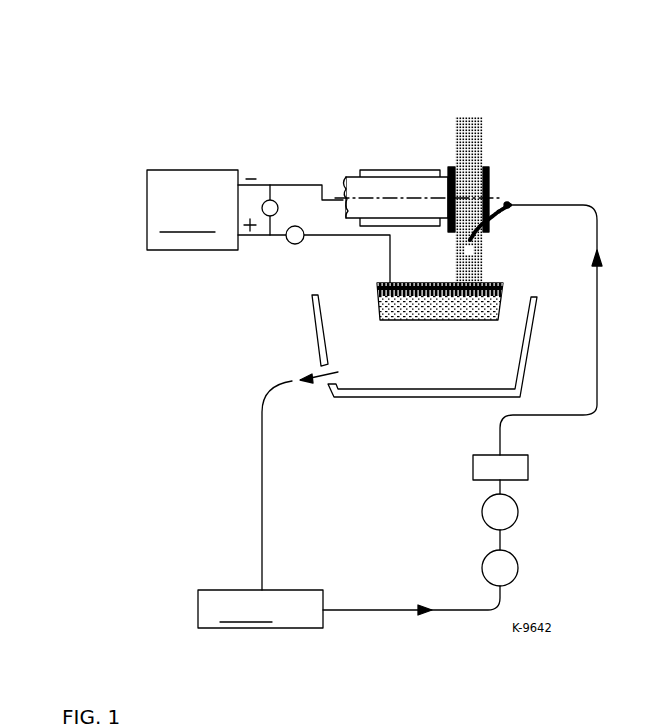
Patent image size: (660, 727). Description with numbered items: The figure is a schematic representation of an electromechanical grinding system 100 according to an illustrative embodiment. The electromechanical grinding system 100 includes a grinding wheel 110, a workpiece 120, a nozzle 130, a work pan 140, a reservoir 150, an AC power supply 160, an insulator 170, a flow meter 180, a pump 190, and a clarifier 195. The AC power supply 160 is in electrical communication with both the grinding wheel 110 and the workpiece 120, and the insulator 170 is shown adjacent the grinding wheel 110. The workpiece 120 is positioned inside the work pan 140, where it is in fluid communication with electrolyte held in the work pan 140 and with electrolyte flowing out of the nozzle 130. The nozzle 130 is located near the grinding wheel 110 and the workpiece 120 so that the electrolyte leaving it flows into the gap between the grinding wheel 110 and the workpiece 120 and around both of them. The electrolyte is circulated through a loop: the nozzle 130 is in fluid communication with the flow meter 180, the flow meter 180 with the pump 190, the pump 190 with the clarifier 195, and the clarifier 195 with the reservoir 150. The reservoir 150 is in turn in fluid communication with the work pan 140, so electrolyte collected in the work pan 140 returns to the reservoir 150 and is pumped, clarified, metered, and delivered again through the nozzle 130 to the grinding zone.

The electromechanical grinding system 100 is at (98, 112).
The grinding wheel 110 is at (462, 113).
The workpiece 120 is at (505, 276).
The nozzle 130 is at (529, 183).
The work pan 140 is at (310, 329).
The reservoir 150 is at (349, 500).
The AC power supply 160 is at (268, 226).
The insulator 170 is at (399, 162).
The flow meter 180 is at (528, 466).
The pump 190 is at (518, 512).
The clarifier 195 is at (518, 568).